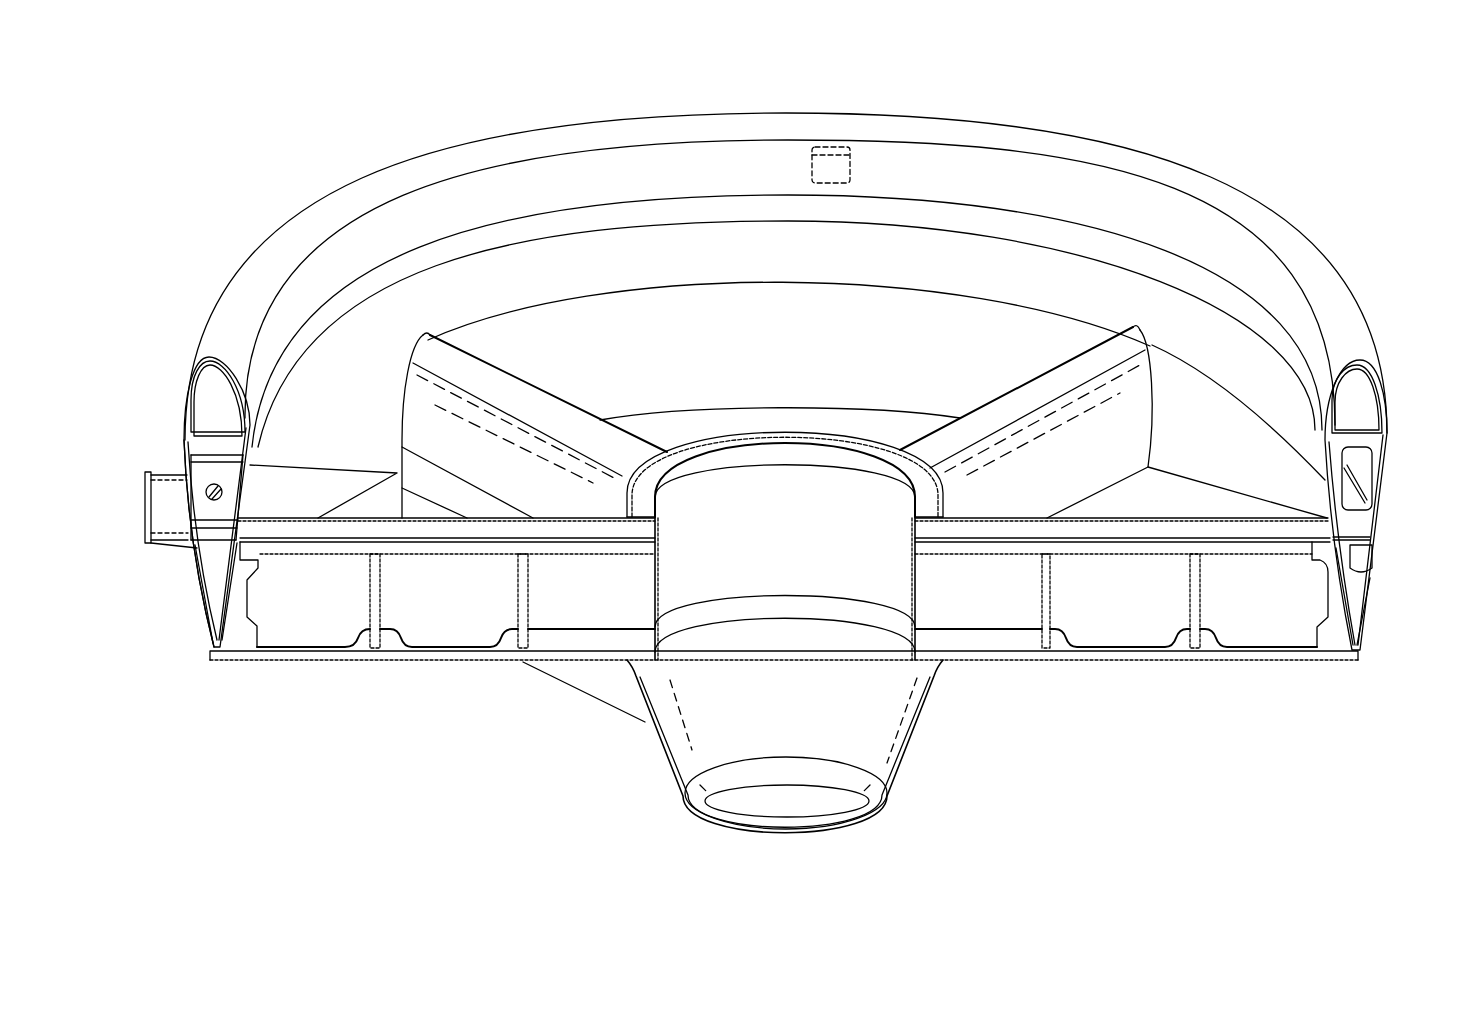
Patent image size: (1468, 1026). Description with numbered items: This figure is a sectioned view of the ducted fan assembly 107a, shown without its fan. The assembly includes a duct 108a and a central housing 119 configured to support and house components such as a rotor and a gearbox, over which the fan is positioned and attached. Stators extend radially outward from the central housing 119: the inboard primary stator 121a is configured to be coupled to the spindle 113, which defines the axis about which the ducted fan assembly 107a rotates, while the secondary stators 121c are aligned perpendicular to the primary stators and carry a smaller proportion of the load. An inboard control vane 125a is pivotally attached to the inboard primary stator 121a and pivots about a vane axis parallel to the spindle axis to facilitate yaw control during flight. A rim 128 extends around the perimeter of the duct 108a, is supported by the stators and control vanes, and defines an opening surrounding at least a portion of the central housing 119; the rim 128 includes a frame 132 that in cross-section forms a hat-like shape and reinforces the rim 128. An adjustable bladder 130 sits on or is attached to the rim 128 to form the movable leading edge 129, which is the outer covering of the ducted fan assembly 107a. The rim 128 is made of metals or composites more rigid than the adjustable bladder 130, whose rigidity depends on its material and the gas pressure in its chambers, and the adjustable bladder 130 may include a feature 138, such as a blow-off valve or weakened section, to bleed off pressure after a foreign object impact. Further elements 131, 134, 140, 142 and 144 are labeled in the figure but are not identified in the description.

The ducted fan assembly 107a is at (228, 96).
The duct 108a is at (185, 398).
The spindle 113 is at (172, 473).
The central housing 119 is at (922, 730).
The inboard primary stator 121a is at (560, 402).
The secondary stator 121c is at (315, 661).
The inboard control vane 125a is at (590, 690).
The rim 128 is at (1370, 510).
The movable leading edge 129 is at (1113, 168).
The adjustable bladder 130 is at (1270, 215).
The end cap 131 is at (1357, 388).
The frame 132 is at (1373, 572).
The outer rim 134 is at (1315, 257).
The feature 138 is at (812, 168).
The mounting assembly 140 is at (181, 581).
The outer bracket 142 is at (198, 593).
The inner bracket 144 is at (215, 613).